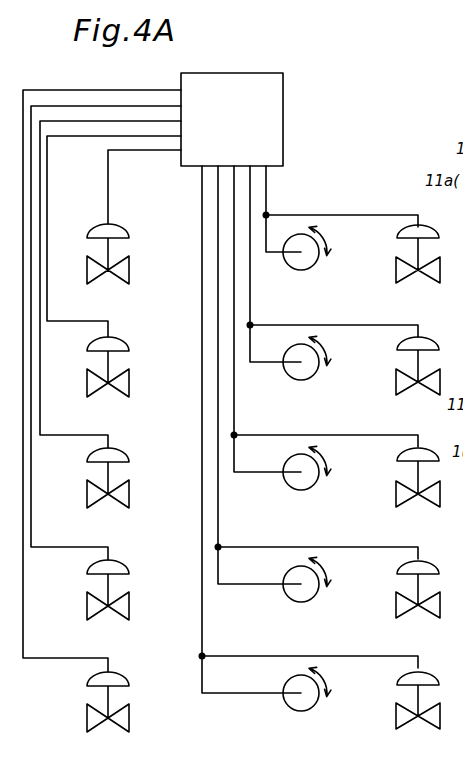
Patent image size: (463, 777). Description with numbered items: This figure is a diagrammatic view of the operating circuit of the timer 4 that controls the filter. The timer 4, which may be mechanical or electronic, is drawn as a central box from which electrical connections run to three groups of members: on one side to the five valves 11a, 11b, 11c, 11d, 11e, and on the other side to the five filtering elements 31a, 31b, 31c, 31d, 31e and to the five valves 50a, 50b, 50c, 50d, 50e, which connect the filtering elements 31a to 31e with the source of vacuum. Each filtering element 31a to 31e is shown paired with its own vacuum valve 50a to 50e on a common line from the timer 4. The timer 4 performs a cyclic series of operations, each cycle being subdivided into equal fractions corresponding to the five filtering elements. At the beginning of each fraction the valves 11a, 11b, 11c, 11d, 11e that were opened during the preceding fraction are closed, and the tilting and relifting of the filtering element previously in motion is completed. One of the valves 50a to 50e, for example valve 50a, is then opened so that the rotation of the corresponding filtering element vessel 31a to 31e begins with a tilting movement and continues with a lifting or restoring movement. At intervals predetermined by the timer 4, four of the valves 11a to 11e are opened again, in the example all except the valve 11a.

The timer 4 is at (283, 128).
The valve 11a is at (129, 282).
The valve 11b is at (129, 395).
The valve 11c is at (129, 506).
The valve 11d is at (129, 618).
The valve 11e is at (129, 730).
The filtering element 31a is at (298, 270).
The filtering element 31b is at (289, 378).
The filtering element 31c is at (291, 489).
The filtering element 31d is at (292, 601).
The filtering element 31e is at (306, 711).
The valve 50a is at (396, 278).
The valve 50b is at (397, 389).
The valve 50c is at (397, 506).
The valve 50d is at (398, 609).
The valve 50e is at (397, 728).